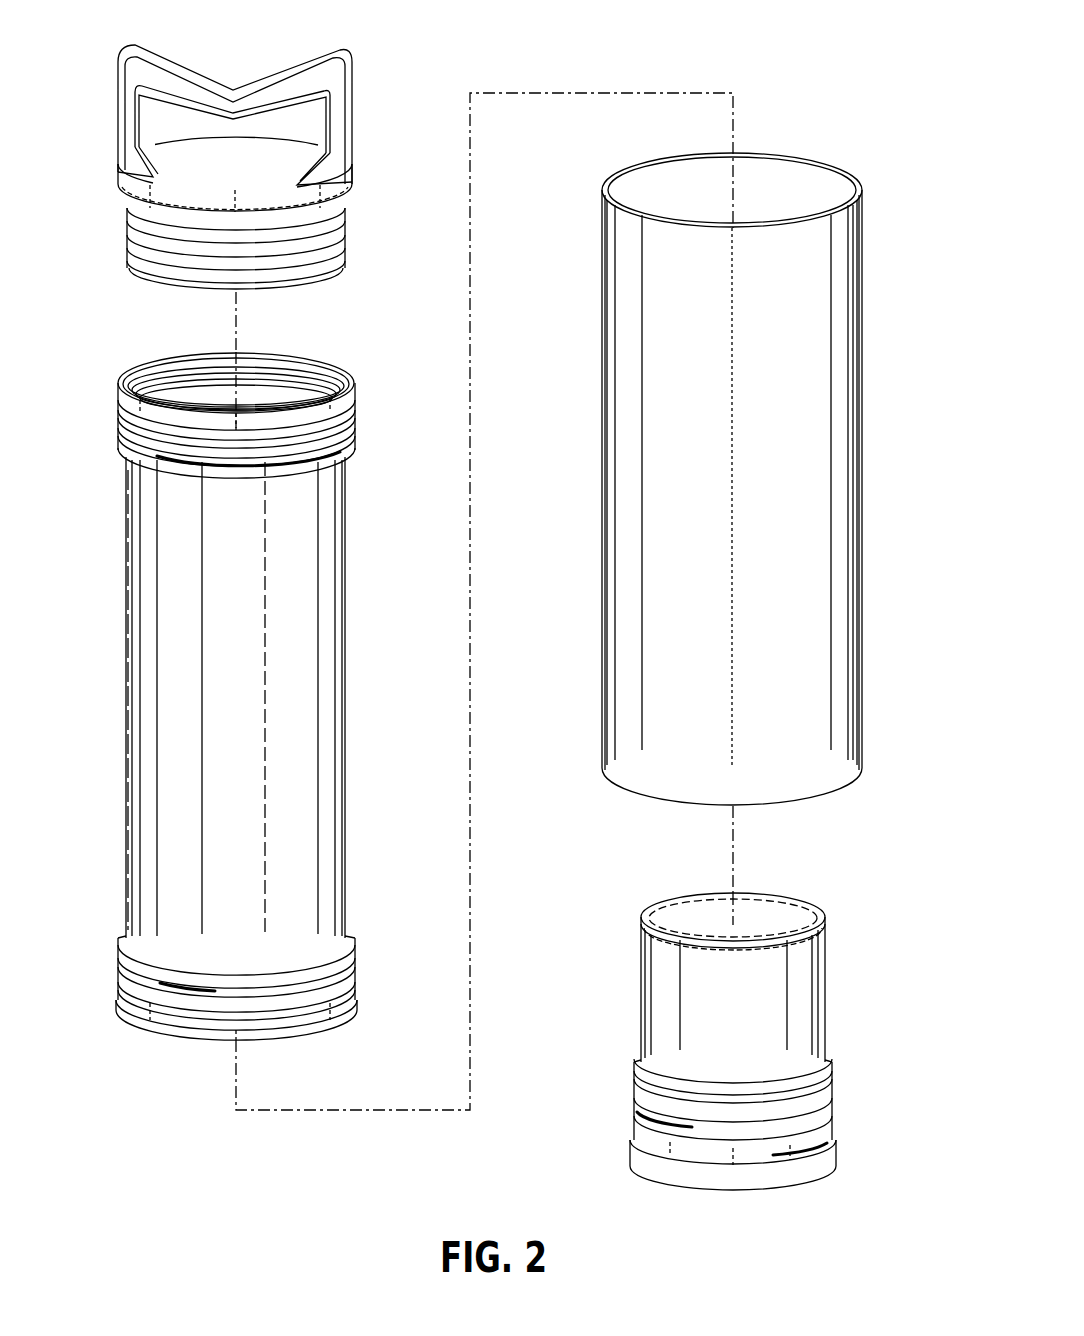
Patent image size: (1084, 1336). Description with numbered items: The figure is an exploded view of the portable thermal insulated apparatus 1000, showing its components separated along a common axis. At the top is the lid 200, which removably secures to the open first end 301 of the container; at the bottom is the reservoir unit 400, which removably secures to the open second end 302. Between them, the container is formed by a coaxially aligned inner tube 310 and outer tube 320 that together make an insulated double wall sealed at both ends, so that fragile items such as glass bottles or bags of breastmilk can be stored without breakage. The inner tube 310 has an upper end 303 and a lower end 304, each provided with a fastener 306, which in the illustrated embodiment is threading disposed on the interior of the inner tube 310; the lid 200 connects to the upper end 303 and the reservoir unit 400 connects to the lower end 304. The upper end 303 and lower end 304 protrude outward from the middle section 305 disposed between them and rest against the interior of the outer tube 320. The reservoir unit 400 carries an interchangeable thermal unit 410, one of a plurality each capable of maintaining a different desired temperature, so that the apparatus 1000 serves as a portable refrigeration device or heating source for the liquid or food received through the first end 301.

The portable thermal insulated apparatus 1000 is at (826, 66).
The lid 200 is at (347, 86).
The open first end 301 is at (860, 166).
The open second end 302 is at (828, 795).
The upper end 303 is at (125, 370).
The lower end 304 is at (155, 1032).
The middle section 305 is at (152, 623).
The fastener 306 is at (292, 385).
The inner tube 310 is at (310, 608).
The outer tube 320 is at (817, 458).
The reservoir unit 400 is at (836, 1152).
The thermal unit 410 is at (805, 983).